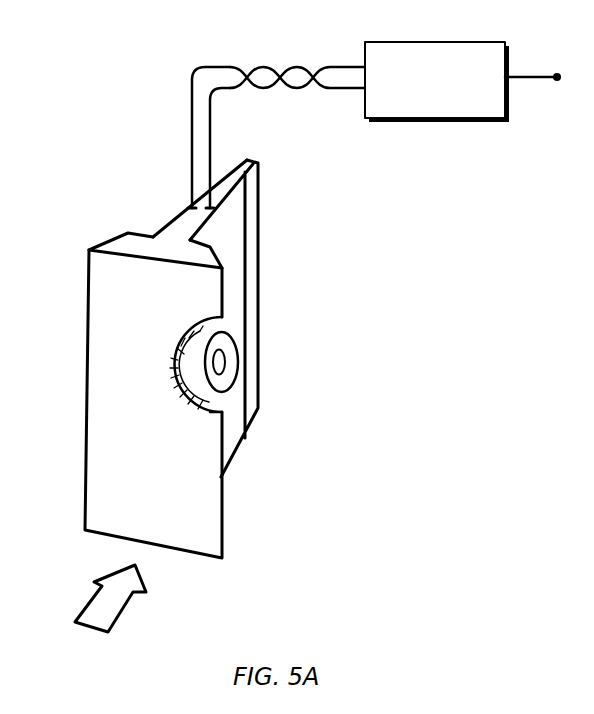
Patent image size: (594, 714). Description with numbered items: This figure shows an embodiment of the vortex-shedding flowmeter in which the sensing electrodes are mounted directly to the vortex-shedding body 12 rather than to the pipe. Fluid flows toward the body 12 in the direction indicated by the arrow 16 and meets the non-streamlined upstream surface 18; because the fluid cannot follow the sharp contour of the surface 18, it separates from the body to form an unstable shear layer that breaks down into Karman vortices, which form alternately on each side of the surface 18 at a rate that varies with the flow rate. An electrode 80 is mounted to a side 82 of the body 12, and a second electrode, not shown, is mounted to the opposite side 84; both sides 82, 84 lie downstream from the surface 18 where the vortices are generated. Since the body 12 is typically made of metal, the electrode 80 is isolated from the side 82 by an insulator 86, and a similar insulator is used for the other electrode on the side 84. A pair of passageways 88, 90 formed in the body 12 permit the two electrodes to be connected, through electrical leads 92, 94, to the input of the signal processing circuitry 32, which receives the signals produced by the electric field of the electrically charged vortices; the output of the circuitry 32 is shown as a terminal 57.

The vortex-shedding body 12 is at (118, 246).
The arrow 16 is at (103, 581).
The upstream surface 18 is at (112, 323).
The signal processing circuitry 32 is at (492, 42).
The output terminal 57 is at (556, 84).
The electrode 80 is at (227, 367).
The side 82 is at (232, 267).
The side 84 is at (168, 225).
The insulator 86 is at (232, 347).
The passageway 88 is at (190, 206).
The passageway 90 is at (212, 208).
The electrical lead 92 is at (297, 66).
The electrical lead 94 is at (258, 66).